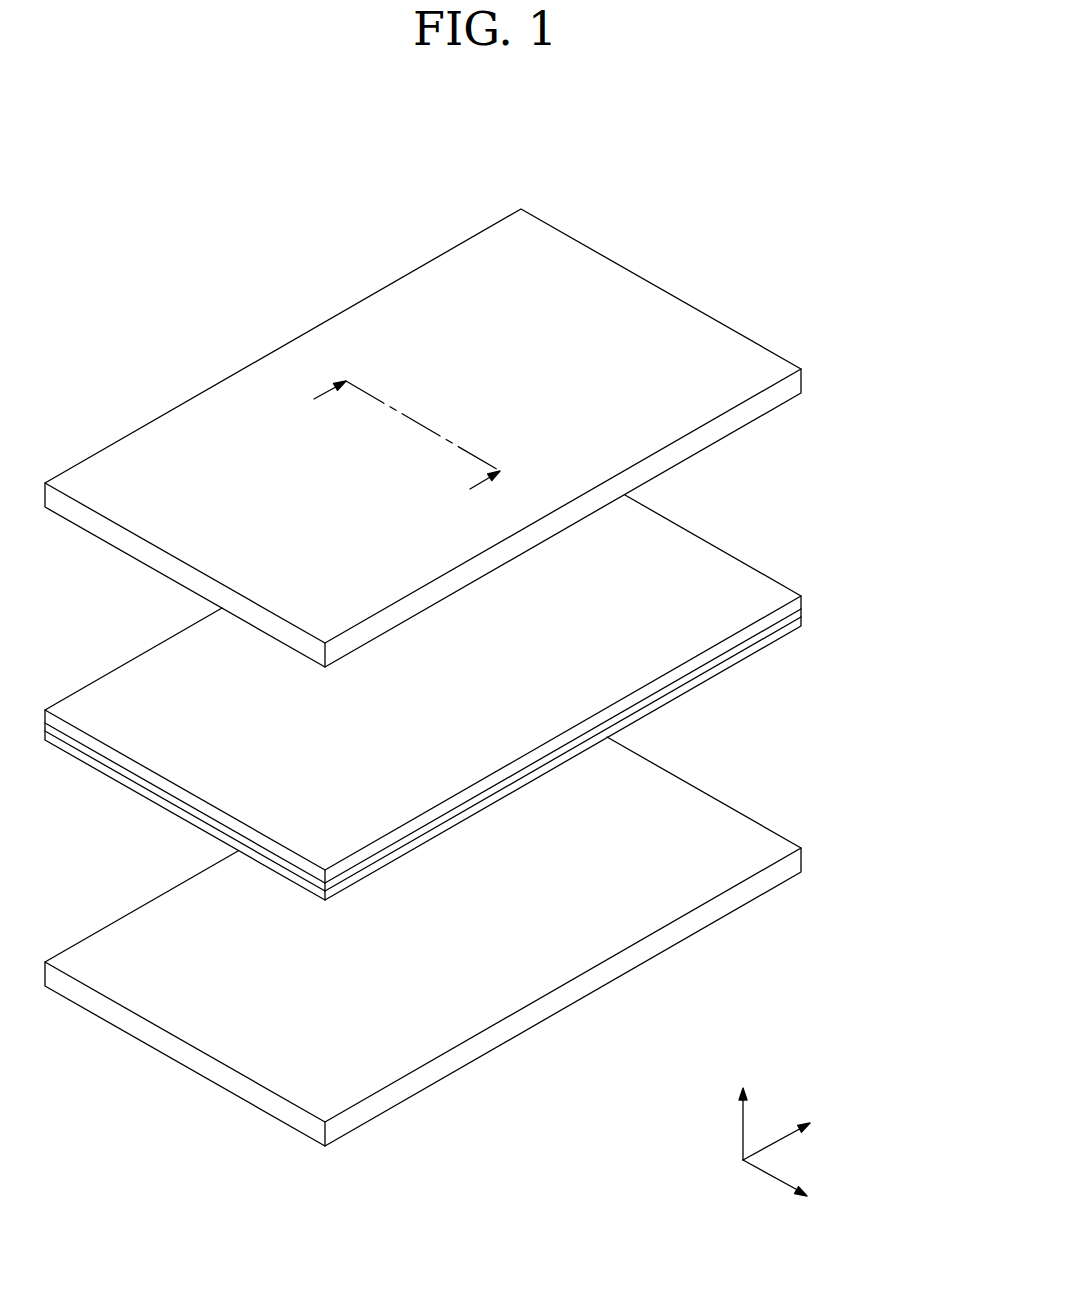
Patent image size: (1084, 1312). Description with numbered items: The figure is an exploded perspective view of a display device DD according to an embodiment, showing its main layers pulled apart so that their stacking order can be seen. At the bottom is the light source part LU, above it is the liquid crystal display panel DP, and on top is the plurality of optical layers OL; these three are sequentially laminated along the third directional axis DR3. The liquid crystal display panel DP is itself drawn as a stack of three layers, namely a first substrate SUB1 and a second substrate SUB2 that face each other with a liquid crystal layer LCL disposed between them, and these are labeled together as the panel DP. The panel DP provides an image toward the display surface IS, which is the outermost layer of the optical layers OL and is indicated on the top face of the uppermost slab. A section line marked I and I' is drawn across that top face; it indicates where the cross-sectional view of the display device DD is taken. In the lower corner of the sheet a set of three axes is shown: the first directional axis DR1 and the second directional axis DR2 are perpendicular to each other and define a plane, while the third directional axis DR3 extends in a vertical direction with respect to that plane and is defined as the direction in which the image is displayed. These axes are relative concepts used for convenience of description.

The display device DD is at (296, 300).
The display surface IS is at (654, 308).
The optical layers OL is at (463, 438).
The line I-I' I is at (399, 426).
The line I- I' is at (476, 489).
The liquid crystal display panel DP is at (503, 697).
The first substrate SUB1 is at (806, 603).
The liquid crystal layer LCL is at (806, 613).
The second substrate SUB2 is at (806, 623).
The light source part LU is at (806, 860).
The first directional axis DR1 is at (798, 1189).
The second directional axis DR2 is at (798, 1134).
The third directional axis DR3 is at (742, 1111).